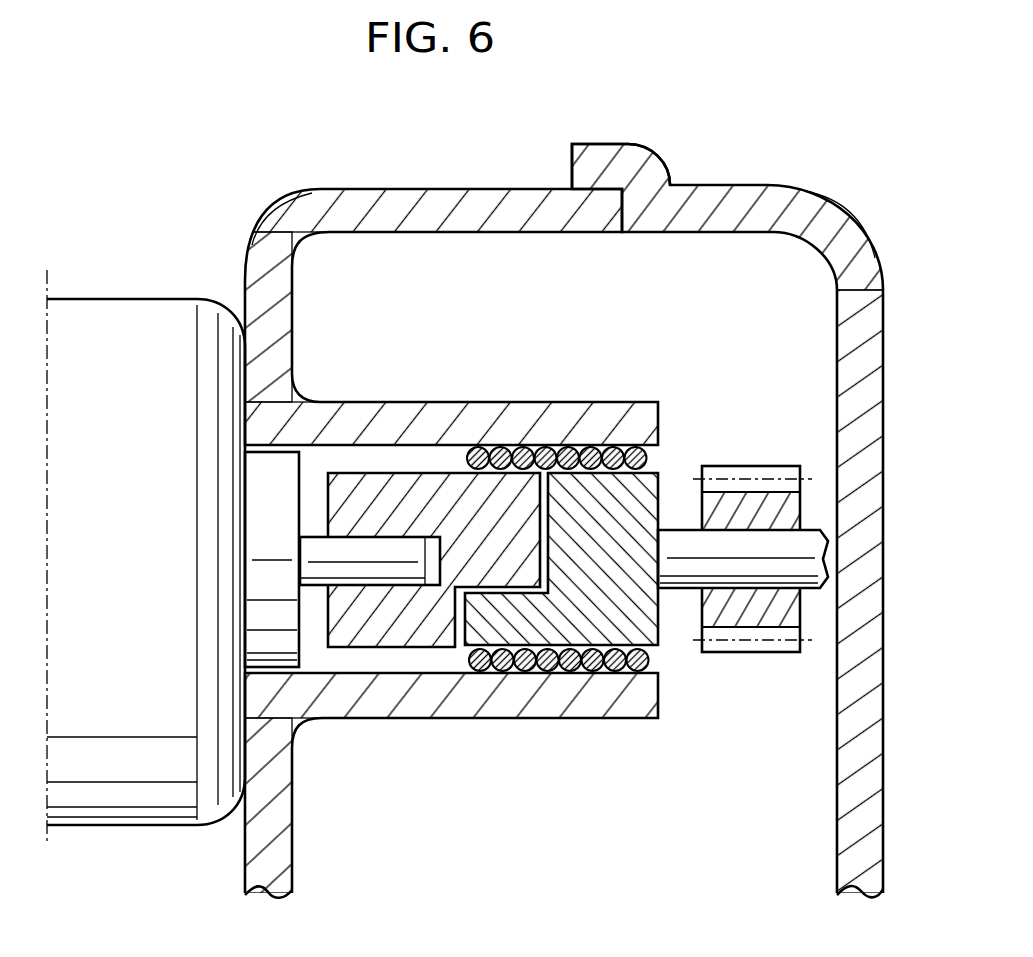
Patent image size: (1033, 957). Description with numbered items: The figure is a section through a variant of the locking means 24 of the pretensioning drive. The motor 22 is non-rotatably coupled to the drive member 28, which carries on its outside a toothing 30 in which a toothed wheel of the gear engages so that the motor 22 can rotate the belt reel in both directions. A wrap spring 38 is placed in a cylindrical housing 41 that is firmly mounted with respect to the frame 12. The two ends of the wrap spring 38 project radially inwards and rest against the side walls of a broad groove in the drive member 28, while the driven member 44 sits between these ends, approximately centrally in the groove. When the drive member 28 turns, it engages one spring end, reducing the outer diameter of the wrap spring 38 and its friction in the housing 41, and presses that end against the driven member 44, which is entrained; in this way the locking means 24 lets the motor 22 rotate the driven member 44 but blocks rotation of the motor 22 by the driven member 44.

The frame 12 is at (866, 737).
The motor 22 is at (130, 792).
The locking means 24 is at (773, 141).
The drive member 28 is at (388, 625).
The toothing 30 is at (757, 648).
The wrap spring 38 is at (511, 665).
The cylindrical housing 41 is at (503, 428).
The driven member 44 is at (613, 630).